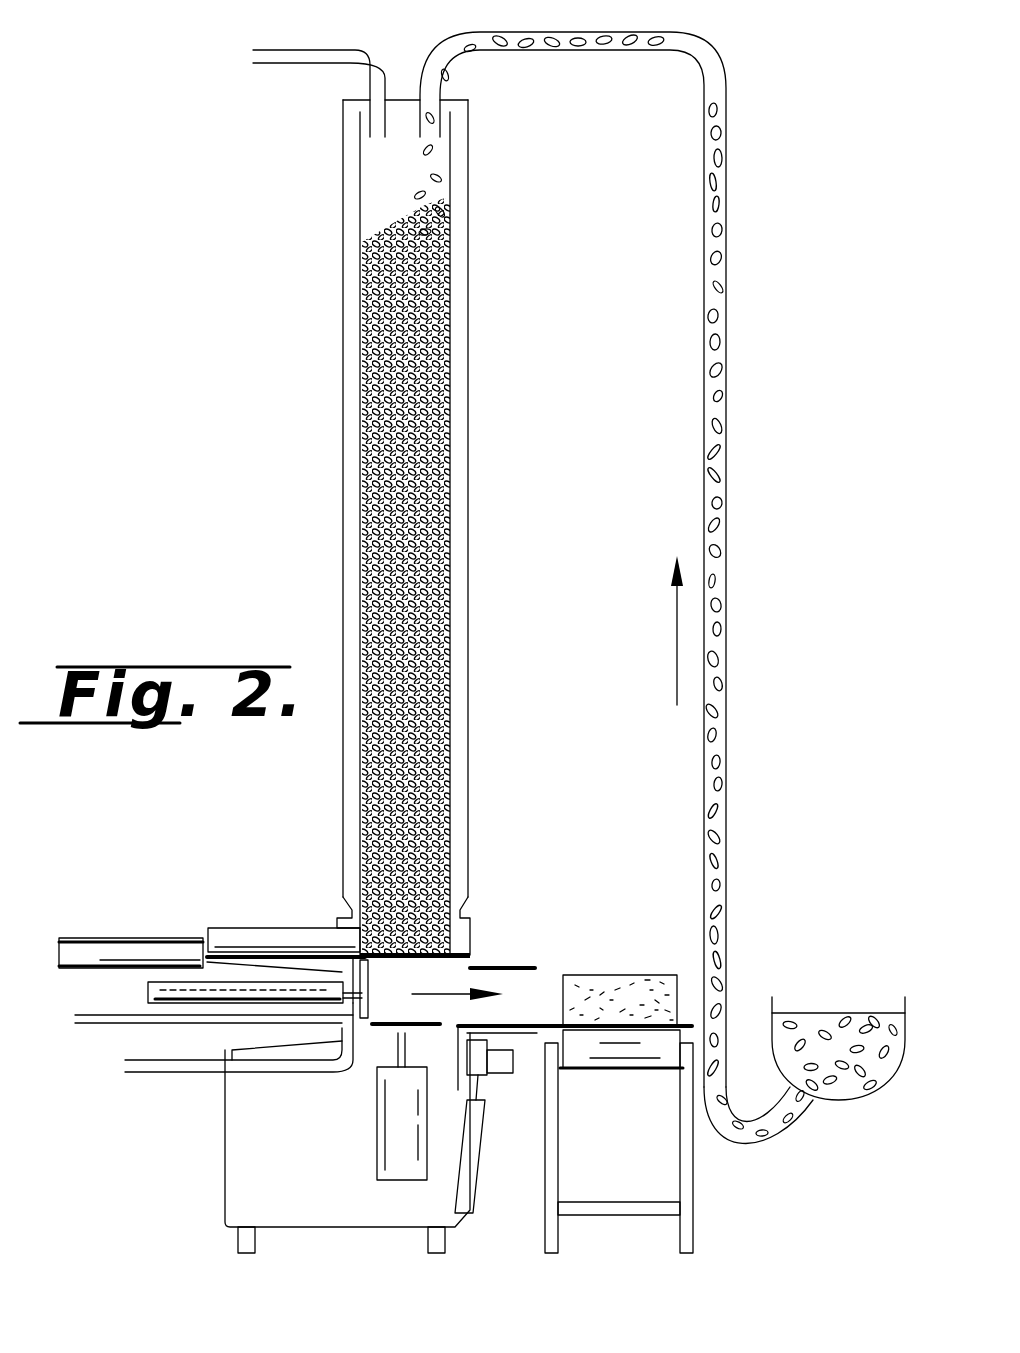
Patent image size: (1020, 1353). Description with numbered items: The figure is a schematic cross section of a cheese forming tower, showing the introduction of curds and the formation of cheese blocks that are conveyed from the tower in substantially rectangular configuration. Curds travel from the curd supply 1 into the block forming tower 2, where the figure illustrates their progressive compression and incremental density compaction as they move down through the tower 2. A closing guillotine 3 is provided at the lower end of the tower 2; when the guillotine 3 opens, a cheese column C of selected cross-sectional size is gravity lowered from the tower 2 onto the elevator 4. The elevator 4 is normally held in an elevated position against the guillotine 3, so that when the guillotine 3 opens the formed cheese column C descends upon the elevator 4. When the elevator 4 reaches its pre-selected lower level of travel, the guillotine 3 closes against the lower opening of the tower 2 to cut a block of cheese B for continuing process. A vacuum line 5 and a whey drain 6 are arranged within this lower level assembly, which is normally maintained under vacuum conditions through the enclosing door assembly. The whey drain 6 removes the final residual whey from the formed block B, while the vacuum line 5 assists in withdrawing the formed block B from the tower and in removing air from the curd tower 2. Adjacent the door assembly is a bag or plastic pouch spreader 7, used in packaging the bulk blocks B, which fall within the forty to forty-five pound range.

The curd supply 1 is at (835, 1025).
The block forming tower 2 is at (458, 207).
The closing guillotine 3 is at (298, 950).
The elevator 4 is at (236, 940).
The vacuum line 5 is at (325, 48).
The whey drain 6 is at (283, 1068).
The bag or plastic pouch spreader 7 is at (510, 963).
The block of cheese B is at (623, 985).
The cheese column C is at (364, 462).